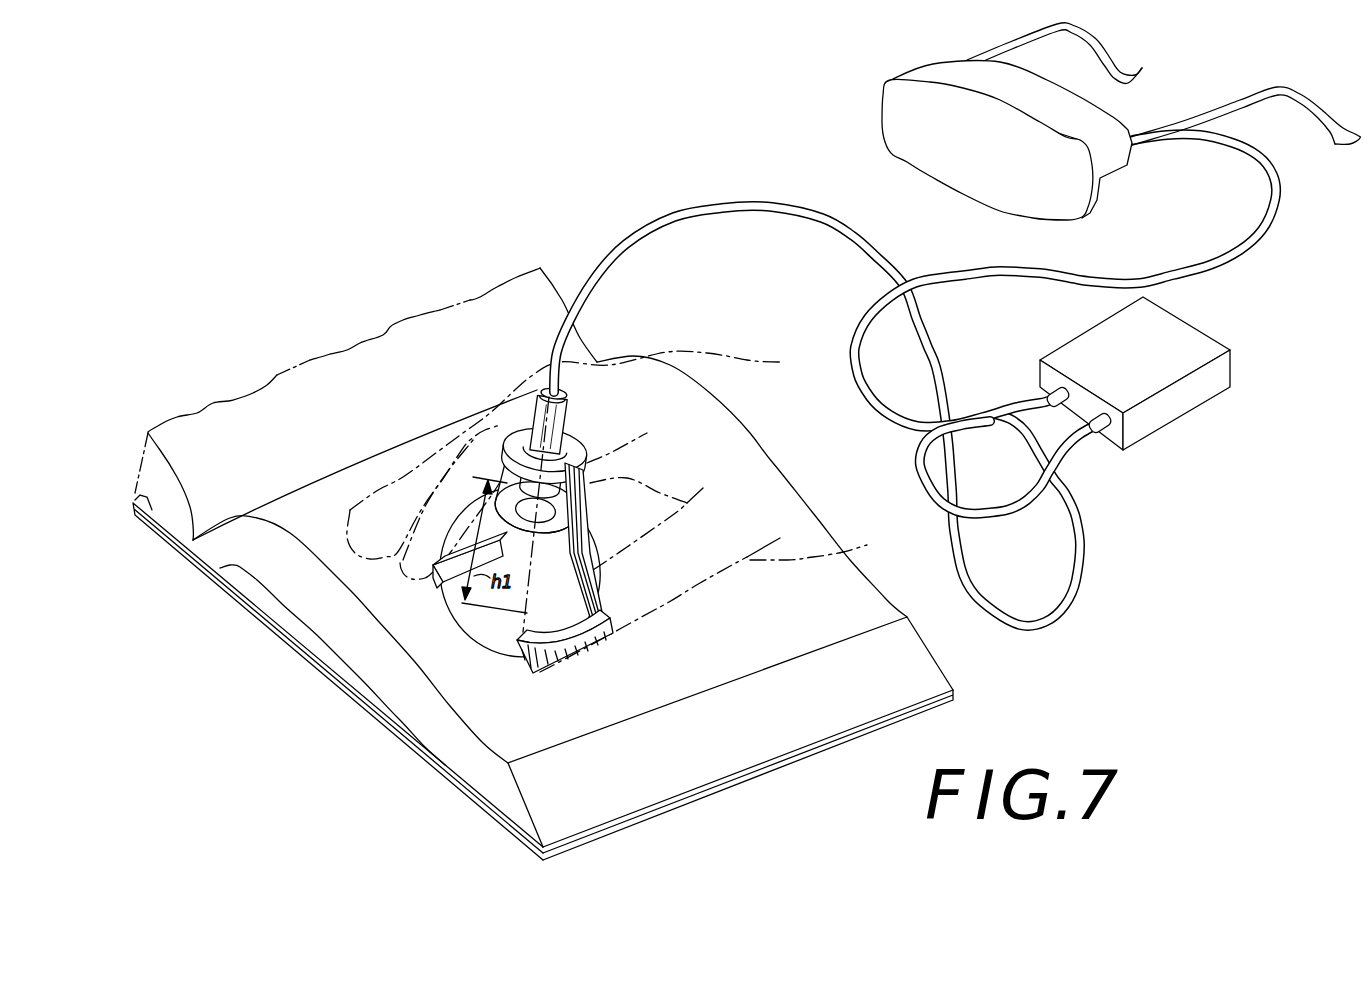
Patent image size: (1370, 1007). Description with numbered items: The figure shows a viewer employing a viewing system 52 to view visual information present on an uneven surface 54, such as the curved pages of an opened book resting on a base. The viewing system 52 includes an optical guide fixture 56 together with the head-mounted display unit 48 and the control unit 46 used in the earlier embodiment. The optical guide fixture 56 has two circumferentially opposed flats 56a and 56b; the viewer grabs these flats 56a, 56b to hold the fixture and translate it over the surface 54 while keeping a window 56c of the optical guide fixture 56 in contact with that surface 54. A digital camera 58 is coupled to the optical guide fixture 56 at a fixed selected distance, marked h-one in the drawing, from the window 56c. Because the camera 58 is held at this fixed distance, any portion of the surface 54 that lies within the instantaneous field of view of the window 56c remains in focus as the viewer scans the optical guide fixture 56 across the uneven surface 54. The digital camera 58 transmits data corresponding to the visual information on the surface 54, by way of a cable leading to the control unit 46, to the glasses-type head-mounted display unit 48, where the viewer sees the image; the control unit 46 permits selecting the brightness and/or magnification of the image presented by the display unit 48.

The control unit 46 is at (1136, 371).
The head-mounted display unit 48 is at (879, 89).
The viewing system 52 is at (522, 422).
The uneven surface 54 is at (890, 667).
The optical guide fixture 56 is at (590, 484).
The flat 56a is at (567, 651).
The flat 56b is at (447, 557).
The window 56c is at (462, 617).
The digital camera 58 is at (562, 421).